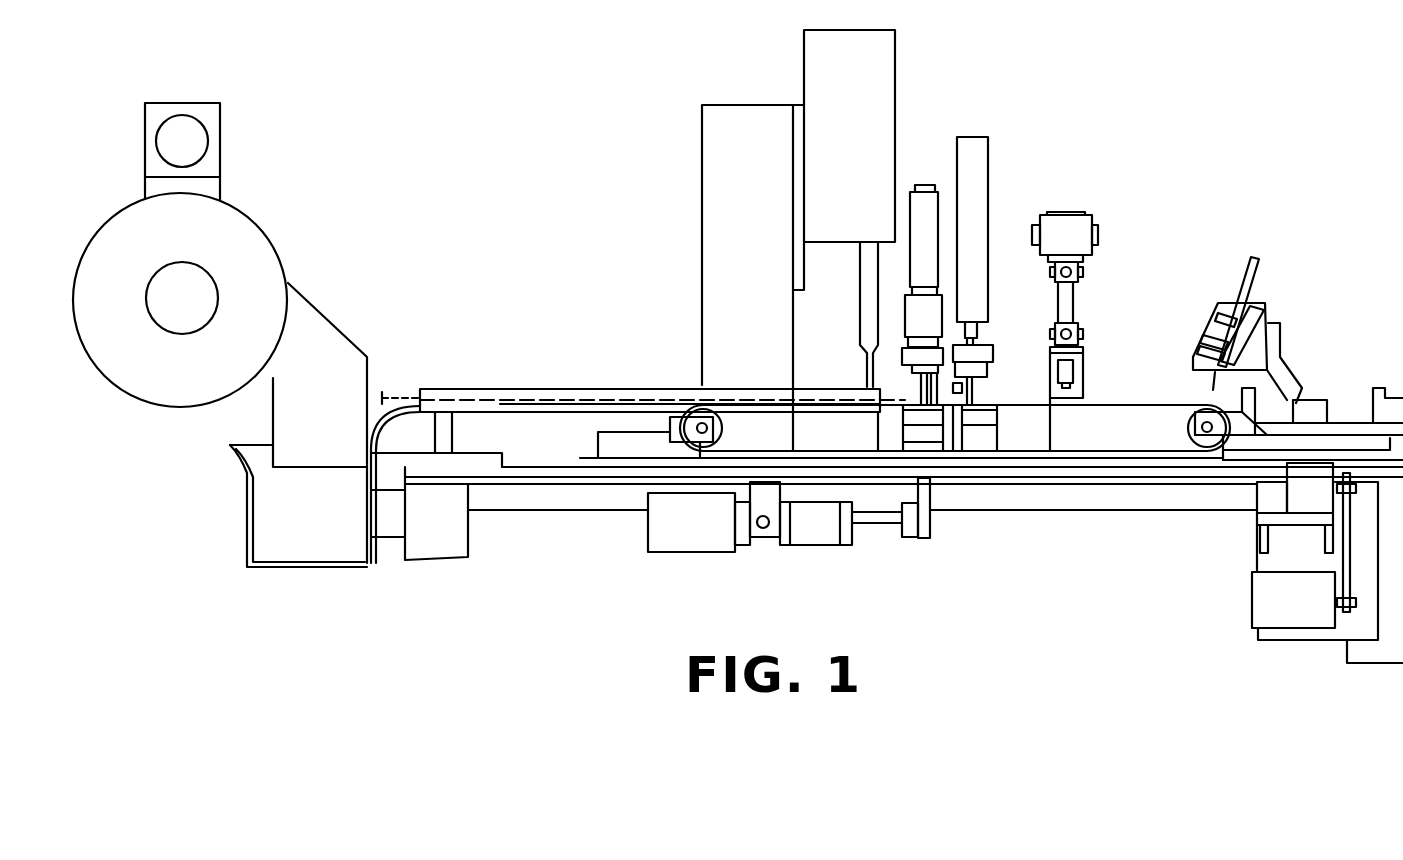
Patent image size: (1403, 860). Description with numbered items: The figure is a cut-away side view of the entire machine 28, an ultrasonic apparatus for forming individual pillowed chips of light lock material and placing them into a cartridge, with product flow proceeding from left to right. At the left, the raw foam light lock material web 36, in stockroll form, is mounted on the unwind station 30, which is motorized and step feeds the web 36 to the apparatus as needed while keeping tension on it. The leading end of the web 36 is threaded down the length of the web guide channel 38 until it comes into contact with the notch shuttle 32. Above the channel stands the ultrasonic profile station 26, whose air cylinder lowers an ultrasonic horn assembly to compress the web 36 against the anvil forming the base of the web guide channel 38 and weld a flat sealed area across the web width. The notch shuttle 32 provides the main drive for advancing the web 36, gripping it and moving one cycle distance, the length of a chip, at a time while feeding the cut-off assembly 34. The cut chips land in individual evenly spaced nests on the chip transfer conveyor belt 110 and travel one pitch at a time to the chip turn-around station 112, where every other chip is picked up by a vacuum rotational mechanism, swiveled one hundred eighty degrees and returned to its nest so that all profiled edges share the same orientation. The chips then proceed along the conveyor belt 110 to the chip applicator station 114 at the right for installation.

The ultrasonic profile station 26 is at (877, 63).
The machine 28 is at (502, 137).
The unwind station 30 is at (250, 238).
The notch shuttle 32 is at (920, 207).
The cut-off assembly 34 is at (967, 170).
The light lock material web 36 is at (397, 394).
The web guide channel 38 is at (443, 395).
The chip transfer conveyor belt 110 is at (1115, 404).
The chip turn-around station 112 is at (1063, 230).
The chip applicator station 114 is at (1257, 307).